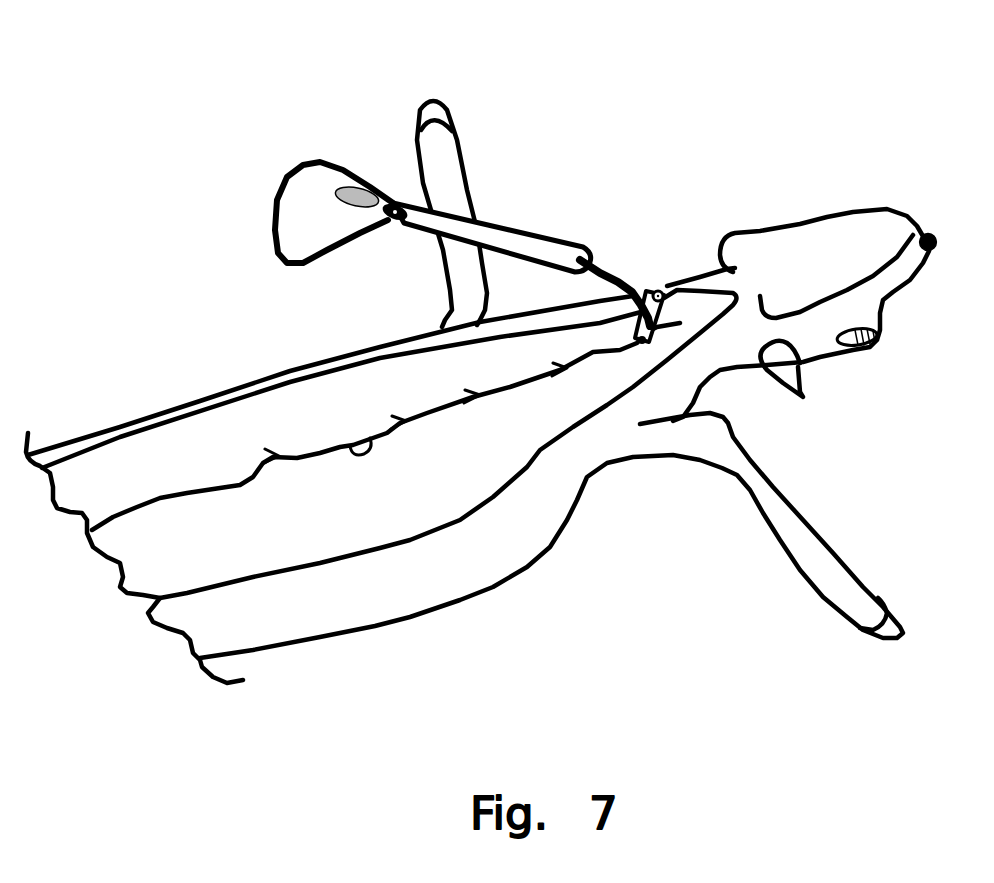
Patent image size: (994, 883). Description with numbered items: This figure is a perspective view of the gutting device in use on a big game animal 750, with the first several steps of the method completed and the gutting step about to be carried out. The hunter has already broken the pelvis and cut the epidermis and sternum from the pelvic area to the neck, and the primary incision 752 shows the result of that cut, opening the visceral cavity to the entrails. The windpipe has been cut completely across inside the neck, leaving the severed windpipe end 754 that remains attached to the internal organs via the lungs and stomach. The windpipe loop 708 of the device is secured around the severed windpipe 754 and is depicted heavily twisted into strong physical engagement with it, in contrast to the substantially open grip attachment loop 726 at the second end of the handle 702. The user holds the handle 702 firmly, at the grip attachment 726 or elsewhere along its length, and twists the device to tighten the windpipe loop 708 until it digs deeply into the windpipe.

The handle 702 is at (541, 235).
The windpipe loop 708 is at (632, 284).
The grip attachment 726 is at (318, 163).
The big game animal 750 is at (828, 248).
The primary incision 752 is at (343, 453).
The severed windpipe end 754 is at (670, 290).